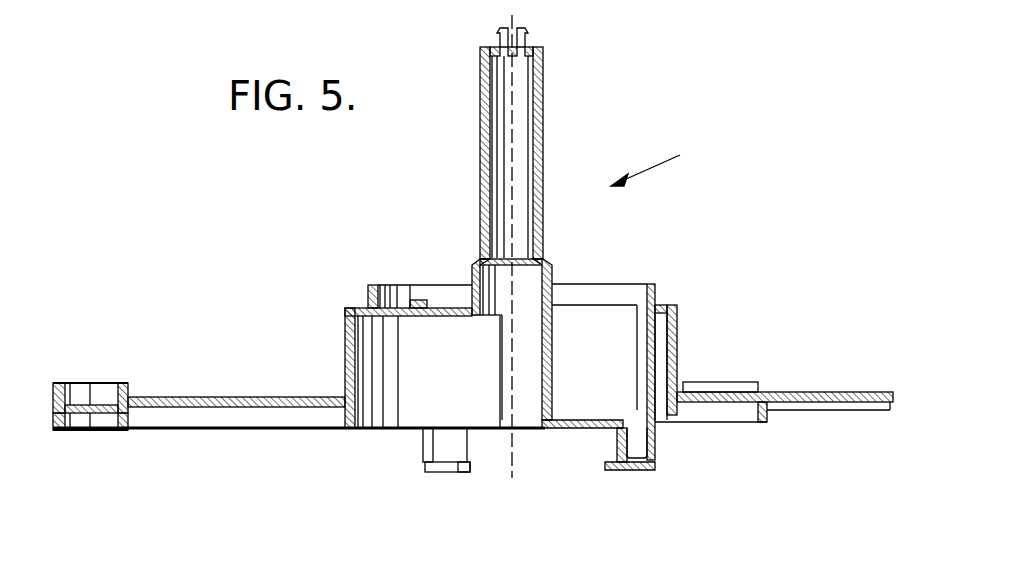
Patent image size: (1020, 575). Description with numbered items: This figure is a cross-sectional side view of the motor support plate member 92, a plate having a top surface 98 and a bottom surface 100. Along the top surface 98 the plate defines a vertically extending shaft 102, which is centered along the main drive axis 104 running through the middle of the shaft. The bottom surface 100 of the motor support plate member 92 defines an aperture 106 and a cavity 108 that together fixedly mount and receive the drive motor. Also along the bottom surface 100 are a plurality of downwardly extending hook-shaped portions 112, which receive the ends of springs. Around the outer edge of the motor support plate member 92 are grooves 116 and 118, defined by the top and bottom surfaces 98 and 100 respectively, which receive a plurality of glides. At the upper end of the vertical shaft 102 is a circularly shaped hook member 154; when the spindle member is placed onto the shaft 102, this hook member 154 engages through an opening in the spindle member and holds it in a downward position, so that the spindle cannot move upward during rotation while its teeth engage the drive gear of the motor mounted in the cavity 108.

The motor support plate member 92 is at (659, 164).
The top surface 98 is at (678, 318).
The bottom surface 100 is at (225, 410).
The vertically extending shaft 102 is at (538, 138).
The main drive axis 104 is at (512, 212).
The aperture 106 is at (427, 308).
The cavity 108 is at (383, 400).
The hook-shaped portions 112 is at (455, 450).
The groove 116 is at (100, 388).
The groove 118 is at (102, 425).
The circularly shaped hook member 154 is at (527, 33).